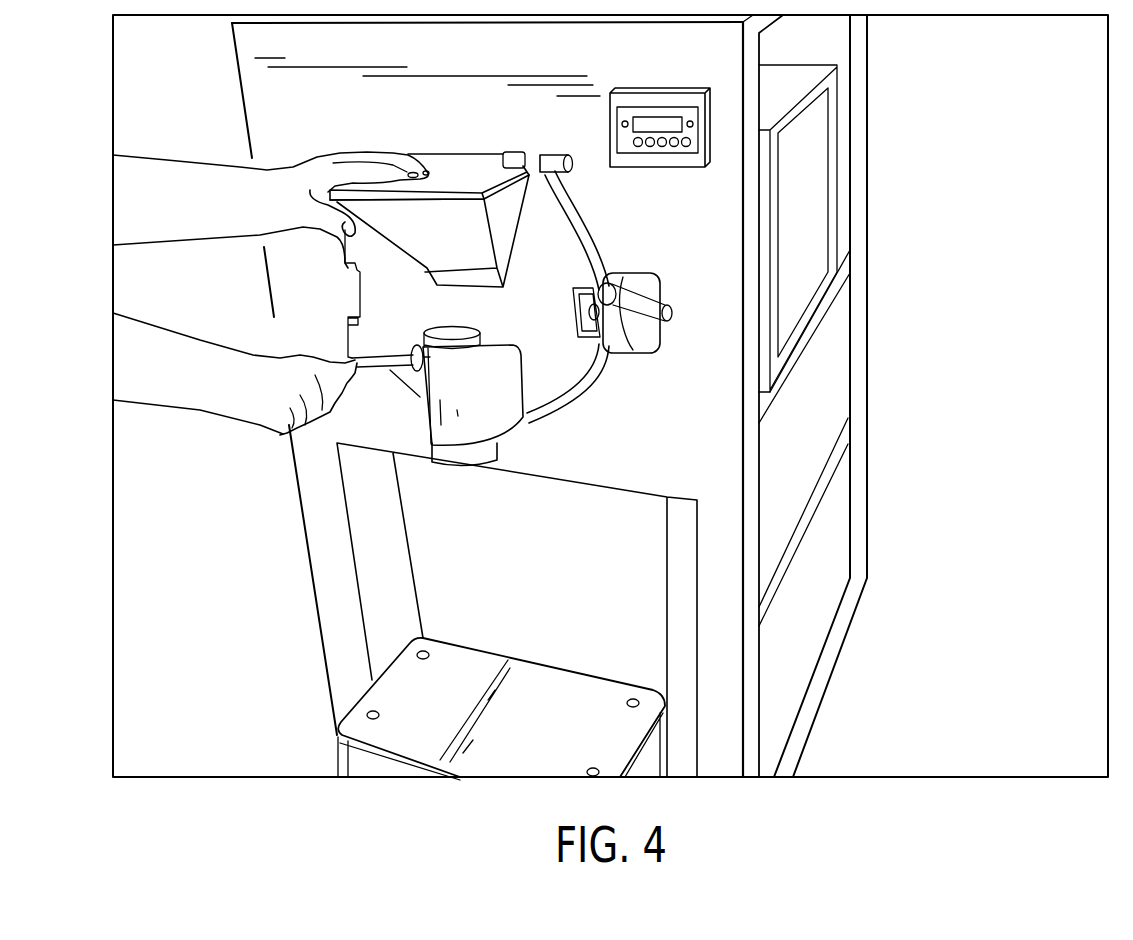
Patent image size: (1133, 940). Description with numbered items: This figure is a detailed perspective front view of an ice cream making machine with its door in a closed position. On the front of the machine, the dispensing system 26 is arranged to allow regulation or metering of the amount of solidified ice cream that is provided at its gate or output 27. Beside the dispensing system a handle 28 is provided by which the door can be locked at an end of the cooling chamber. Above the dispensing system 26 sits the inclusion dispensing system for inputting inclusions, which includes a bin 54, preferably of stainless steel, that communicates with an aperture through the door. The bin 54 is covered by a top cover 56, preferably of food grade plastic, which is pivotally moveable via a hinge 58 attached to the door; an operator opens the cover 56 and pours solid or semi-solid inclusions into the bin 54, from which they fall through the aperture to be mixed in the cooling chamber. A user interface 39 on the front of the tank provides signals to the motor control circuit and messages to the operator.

The dispensing system 26 is at (492, 418).
The gate or output 27 is at (450, 467).
The handle 28 is at (645, 343).
The user interface 39 is at (652, 168).
The bin 54 is at (513, 215).
The top cover 56 is at (457, 178).
The hinge 58 is at (555, 157).